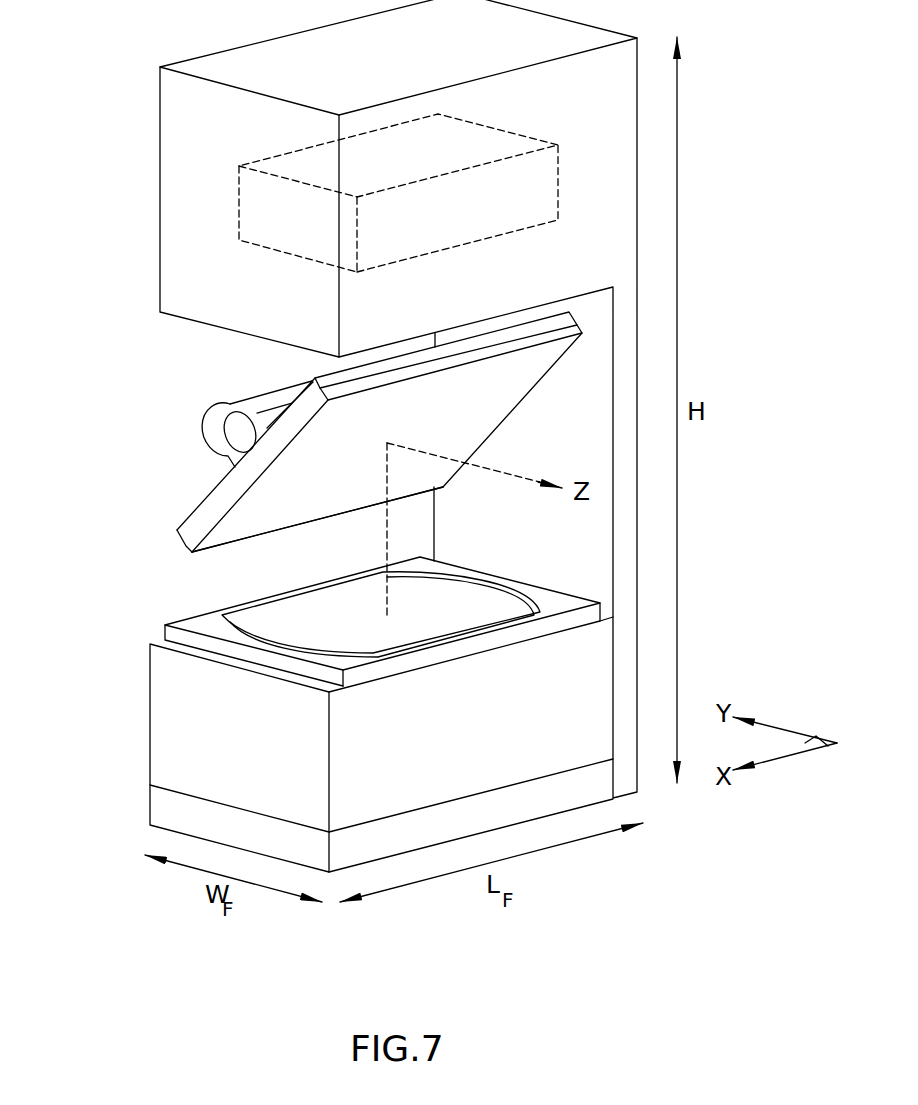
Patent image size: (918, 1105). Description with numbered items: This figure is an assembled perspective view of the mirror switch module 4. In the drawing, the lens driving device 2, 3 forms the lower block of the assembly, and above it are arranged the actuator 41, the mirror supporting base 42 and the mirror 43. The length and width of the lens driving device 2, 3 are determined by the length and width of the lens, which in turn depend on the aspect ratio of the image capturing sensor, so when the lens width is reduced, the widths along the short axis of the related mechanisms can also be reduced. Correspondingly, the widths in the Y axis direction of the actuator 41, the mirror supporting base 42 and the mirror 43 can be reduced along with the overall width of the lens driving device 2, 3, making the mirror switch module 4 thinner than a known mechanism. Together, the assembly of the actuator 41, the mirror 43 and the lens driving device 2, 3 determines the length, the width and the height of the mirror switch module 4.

The lens driving device 2 is at (320, 714).
The lens driving device 3 is at (197, 740).
The mirror switch module 4 is at (712, 128).
The actuator 41 is at (240, 200).
The mirror supporting base 42 is at (203, 513).
The mirror 43 is at (257, 513).